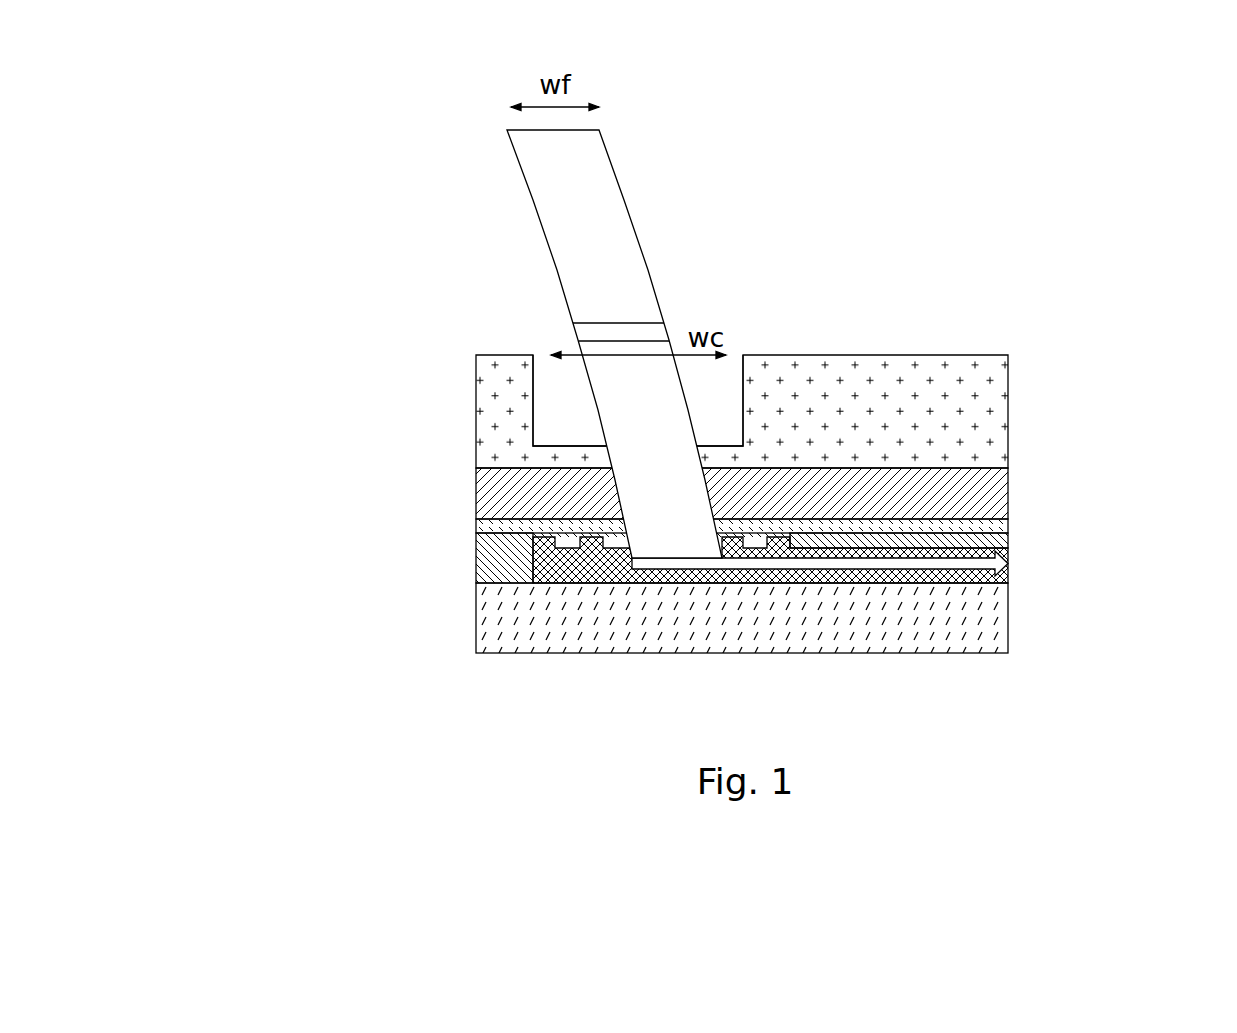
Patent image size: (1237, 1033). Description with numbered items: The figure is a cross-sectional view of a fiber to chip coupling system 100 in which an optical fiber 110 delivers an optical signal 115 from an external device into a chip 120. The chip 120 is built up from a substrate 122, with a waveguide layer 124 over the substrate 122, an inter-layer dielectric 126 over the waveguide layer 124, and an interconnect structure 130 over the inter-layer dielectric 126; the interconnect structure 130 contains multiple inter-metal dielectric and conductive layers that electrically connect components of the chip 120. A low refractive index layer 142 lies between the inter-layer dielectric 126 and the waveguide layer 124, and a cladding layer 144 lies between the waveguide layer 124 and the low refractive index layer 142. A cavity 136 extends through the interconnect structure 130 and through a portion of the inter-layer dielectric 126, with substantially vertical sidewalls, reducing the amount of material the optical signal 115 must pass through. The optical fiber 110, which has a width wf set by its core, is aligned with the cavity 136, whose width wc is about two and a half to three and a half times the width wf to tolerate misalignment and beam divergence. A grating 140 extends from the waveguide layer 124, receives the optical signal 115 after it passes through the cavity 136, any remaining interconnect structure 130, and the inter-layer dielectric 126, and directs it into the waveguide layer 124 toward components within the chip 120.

The fiber to chip coupling system 100 is at (318, 110).
The optical fiber 110 is at (540, 182).
The optical signal 115 is at (618, 389).
The chip 120 is at (765, 498).
The substrate 122 is at (482, 622).
The waveguide layer 124 is at (565, 562).
The inter-layer dielectric (ILD) 126 is at (482, 497).
The interconnect structure 130 is at (462, 356).
The cavity 136 is at (723, 395).
The grating 140 is at (790, 538).
The low refractive index layer 142 is at (1003, 531).
The cladding layer 144 is at (482, 560).